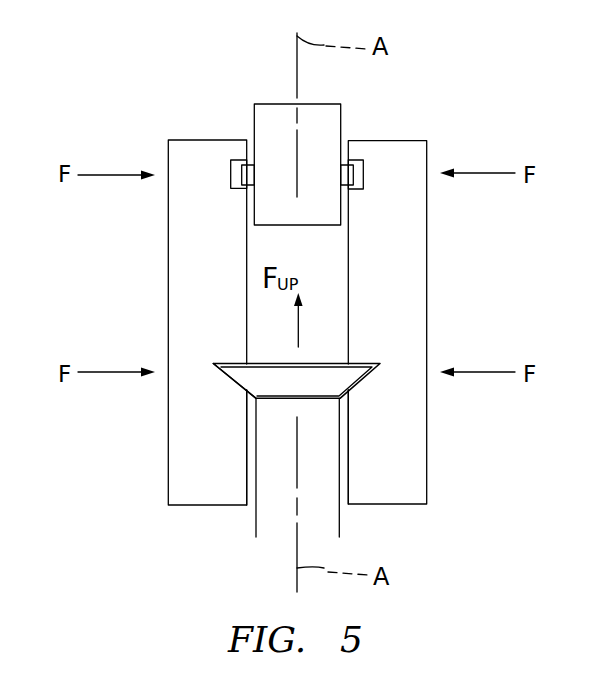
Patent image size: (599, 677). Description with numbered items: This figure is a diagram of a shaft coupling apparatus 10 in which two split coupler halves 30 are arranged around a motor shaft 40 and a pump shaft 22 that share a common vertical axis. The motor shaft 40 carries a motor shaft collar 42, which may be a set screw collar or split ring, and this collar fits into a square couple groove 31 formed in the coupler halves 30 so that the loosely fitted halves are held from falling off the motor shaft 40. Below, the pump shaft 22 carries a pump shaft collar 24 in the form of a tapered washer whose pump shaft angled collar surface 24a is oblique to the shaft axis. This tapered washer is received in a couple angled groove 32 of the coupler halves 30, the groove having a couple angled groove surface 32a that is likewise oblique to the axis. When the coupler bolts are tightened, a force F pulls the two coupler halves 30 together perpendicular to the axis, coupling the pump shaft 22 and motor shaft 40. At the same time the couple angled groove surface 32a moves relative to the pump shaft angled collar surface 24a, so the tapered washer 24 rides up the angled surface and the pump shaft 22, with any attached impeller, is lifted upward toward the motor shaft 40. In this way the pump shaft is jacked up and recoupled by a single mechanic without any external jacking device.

The apparatus 10 is at (92, 123).
The pump shaft 22 is at (255, 527).
The pump shaft collar 24 is at (357, 387).
The pump shaft angled collar surface 24a is at (243, 389).
The coupler halves 30 is at (168, 482).
The couple groove 31 is at (231, 176).
The couple angled groove 32 is at (226, 375).
The couple angled groove surface 32a is at (213, 364).
The motor shaft 40 is at (341, 120).
The motor shaft collar 42 is at (350, 172).